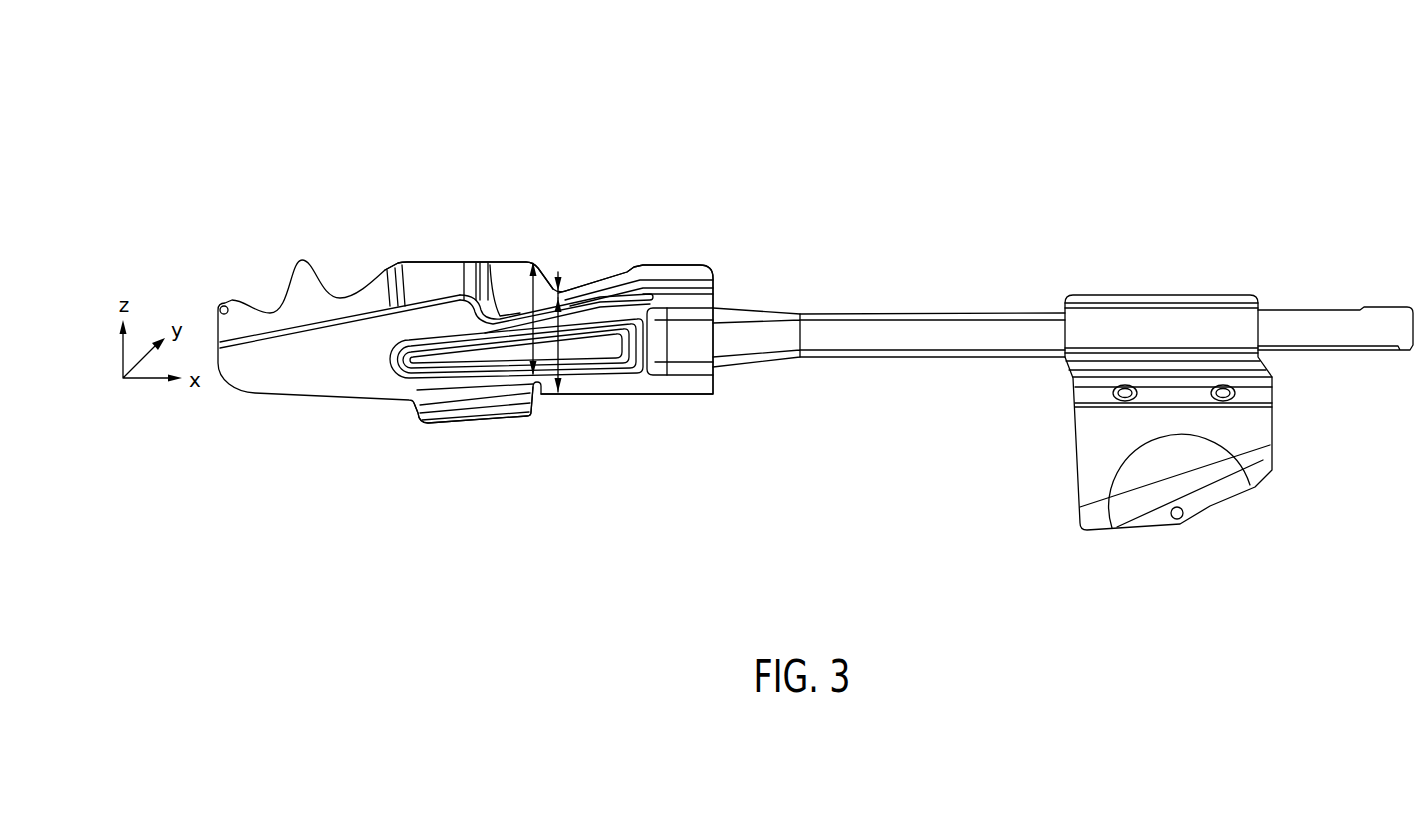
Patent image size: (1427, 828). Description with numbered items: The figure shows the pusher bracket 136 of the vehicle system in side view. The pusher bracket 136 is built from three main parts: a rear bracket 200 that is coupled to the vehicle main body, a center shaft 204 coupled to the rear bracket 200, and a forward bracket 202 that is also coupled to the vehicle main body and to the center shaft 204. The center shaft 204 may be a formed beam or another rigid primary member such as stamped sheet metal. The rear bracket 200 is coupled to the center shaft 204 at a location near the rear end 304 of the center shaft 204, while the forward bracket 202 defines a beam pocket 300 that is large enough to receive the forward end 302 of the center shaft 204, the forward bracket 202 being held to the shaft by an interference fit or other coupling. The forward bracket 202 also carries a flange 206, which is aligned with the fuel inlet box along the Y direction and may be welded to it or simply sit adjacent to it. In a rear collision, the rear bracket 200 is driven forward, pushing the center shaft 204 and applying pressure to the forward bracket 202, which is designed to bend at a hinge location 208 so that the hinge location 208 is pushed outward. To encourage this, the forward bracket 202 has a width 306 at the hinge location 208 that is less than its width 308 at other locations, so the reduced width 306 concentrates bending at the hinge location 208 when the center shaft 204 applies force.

The pusher bracket 136 is at (416, 125).
The rear bracket 200 is at (1253, 427).
The forward bracket 202 is at (435, 270).
The center shaft 204 is at (915, 343).
The flange 206 is at (452, 425).
The hinge location 208 is at (560, 282).
The beam pocket 300 is at (713, 303).
The forward end 302 is at (742, 357).
The rear end 304 is at (1397, 330).
The width 306 is at (562, 385).
The width 308 is at (530, 378).